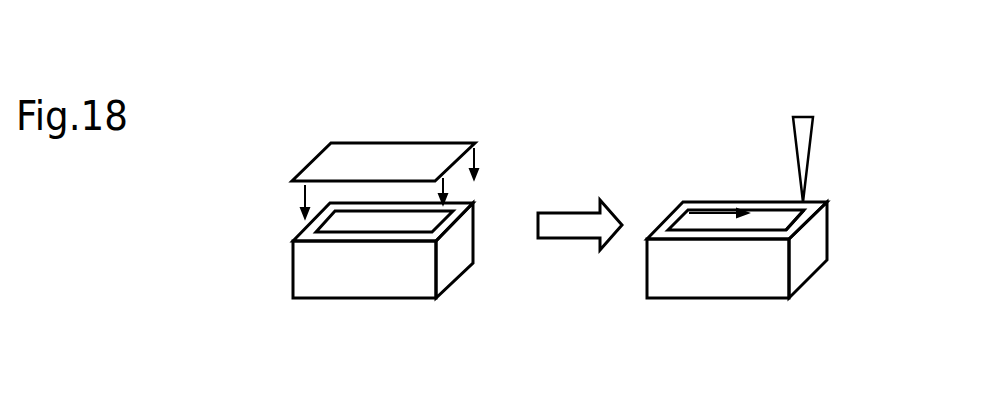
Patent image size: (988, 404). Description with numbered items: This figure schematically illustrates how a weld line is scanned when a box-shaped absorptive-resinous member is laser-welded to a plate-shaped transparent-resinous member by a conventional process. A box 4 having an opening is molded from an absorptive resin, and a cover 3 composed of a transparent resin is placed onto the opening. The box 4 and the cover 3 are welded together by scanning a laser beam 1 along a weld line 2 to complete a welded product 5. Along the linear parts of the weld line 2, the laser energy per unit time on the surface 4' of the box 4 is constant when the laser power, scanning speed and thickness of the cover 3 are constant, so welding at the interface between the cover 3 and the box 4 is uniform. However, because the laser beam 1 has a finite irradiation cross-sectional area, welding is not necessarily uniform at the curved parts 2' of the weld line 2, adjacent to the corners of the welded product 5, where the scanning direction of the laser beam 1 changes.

The laser beam 1 is at (805, 143).
The weld line 2 is at (736, 278).
The curved parts of the weld line 2' is at (817, 271).
The cover 3 is at (435, 153).
The box 4 is at (368, 284).
The surface of the box 4' is at (384, 278).
The welded product 5 is at (817, 238).